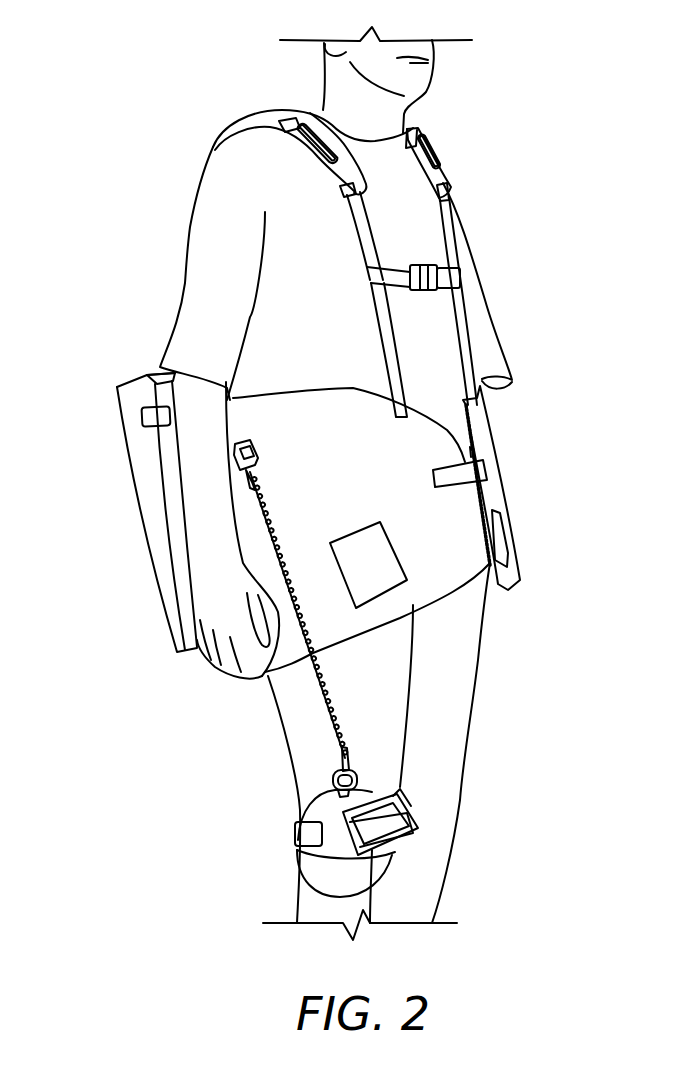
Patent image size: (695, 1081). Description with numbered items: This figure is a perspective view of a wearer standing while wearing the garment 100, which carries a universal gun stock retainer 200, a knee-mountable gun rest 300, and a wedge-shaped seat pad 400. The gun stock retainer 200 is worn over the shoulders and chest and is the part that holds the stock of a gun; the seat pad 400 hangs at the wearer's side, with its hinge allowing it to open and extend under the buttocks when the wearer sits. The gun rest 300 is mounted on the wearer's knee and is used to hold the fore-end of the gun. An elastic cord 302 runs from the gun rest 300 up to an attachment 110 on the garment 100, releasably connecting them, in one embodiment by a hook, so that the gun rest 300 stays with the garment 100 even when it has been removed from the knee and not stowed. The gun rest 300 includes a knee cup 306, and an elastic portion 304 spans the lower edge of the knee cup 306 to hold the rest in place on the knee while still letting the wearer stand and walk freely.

The garment 100 is at (452, 590).
The attachment 110 is at (233, 443).
The gun stock retainer 200 is at (283, 102).
The gun rest 300 is at (377, 832).
The elastic cord 302 is at (313, 680).
The elastic portion 304 is at (317, 877).
The knee cup 306 is at (325, 812).
The wedge-shaped seat pad 400 is at (117, 417).